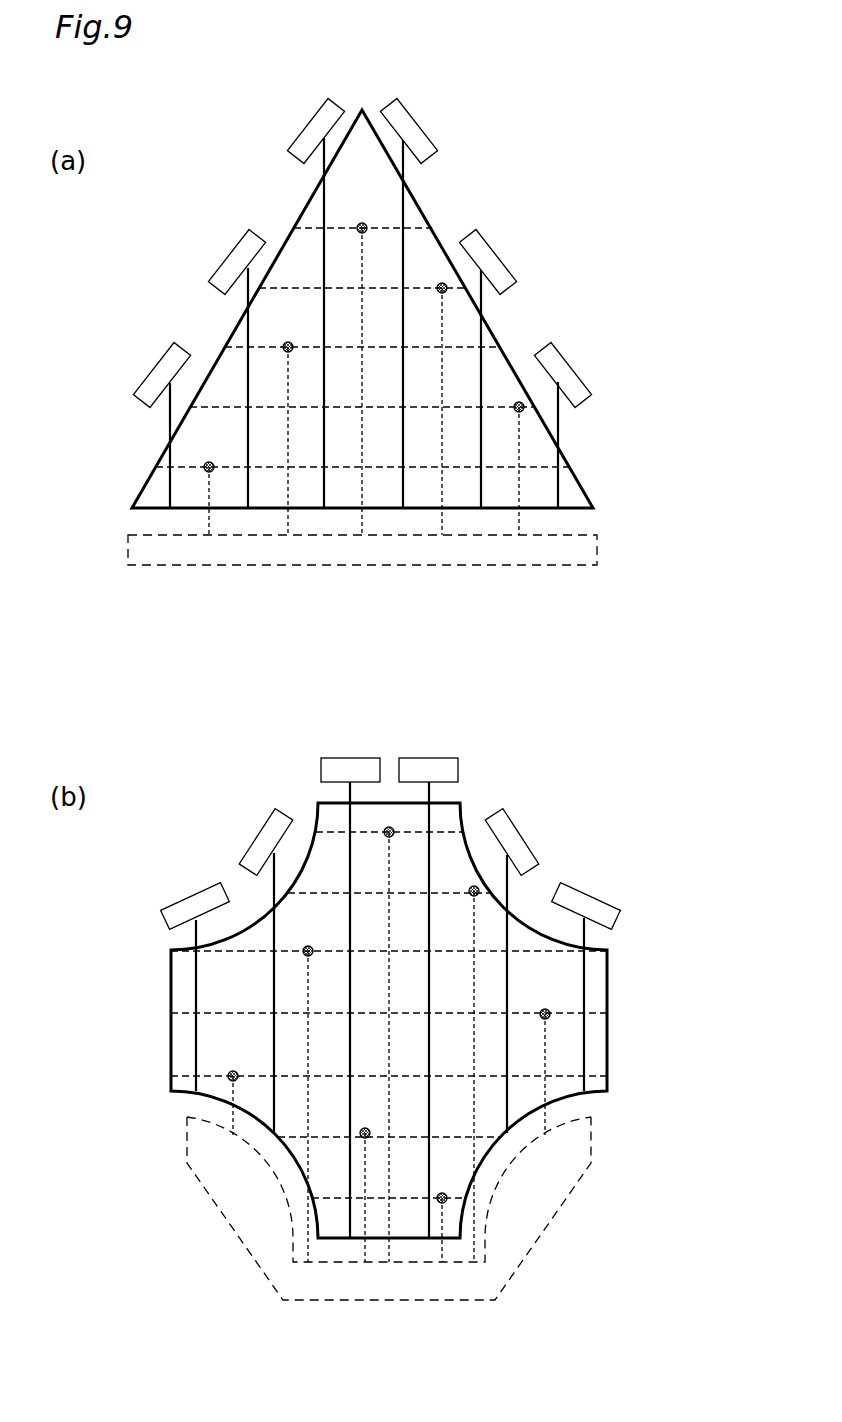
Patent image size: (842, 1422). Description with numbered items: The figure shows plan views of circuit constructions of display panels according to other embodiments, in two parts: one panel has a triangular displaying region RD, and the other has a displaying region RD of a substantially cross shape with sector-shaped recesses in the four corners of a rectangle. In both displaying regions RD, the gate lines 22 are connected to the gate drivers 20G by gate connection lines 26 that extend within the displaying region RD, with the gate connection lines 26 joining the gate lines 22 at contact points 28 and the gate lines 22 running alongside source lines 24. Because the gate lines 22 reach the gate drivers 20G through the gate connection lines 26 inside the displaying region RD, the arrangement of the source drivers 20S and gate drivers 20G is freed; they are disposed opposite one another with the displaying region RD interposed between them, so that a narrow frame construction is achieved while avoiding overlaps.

The source driver 20S is at (412, 135).
The gate driver 20G is at (522, 567).
The gate line 22 is at (378, 290).
The source electrode line 24 is at (483, 452).
The gate connection line 26 is at (445, 314).
The contact 28 is at (288, 342).
The displaying region RD is at (590, 495).